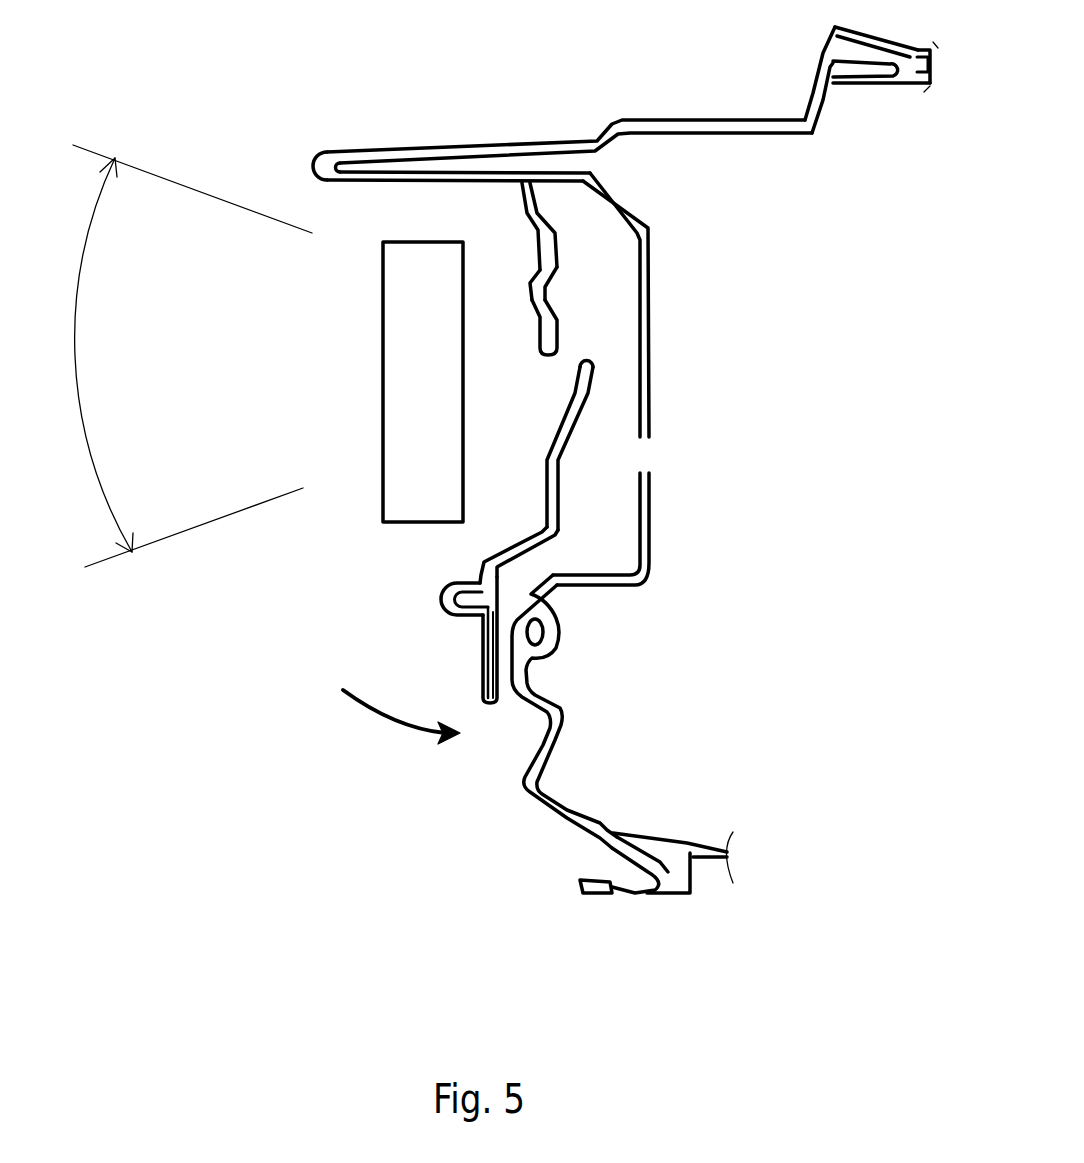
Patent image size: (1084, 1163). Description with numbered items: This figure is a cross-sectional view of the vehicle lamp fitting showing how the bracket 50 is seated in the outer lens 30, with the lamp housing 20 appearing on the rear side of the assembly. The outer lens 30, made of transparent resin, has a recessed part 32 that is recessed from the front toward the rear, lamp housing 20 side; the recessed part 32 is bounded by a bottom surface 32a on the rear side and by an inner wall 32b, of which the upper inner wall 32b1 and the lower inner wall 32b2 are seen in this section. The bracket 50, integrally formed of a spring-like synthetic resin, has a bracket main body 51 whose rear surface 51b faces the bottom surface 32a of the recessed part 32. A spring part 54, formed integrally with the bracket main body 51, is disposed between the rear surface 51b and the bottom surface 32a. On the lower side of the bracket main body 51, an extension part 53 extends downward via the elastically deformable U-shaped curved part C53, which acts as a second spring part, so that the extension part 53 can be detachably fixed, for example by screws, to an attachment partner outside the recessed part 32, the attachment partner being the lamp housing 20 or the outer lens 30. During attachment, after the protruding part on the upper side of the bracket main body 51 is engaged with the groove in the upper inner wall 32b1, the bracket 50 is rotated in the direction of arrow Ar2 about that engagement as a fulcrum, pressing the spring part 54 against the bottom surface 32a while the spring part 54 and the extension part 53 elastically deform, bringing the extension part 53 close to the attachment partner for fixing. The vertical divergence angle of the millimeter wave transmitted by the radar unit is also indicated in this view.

The lamp housing 20 is at (917, 50).
The outer lens 30 is at (563, 140).
The recessed part 32 is at (619, 354).
The bottom surface 32a is at (638, 408).
The inner wall 32b is at (550, 383).
The upper inner wall 32b1 is at (544, 269).
The lower inner wall 32b2 is at (585, 575).
The bracket 50 is at (570, 269).
The bracket main body 51 is at (574, 311).
The rear surface 51b is at (551, 318).
The extension part 53 is at (488, 700).
The spring part 54 is at (572, 437).
The U-shaped curved part C53 is at (442, 595).
The arrow direction of rotation Ar2 is at (393, 727).